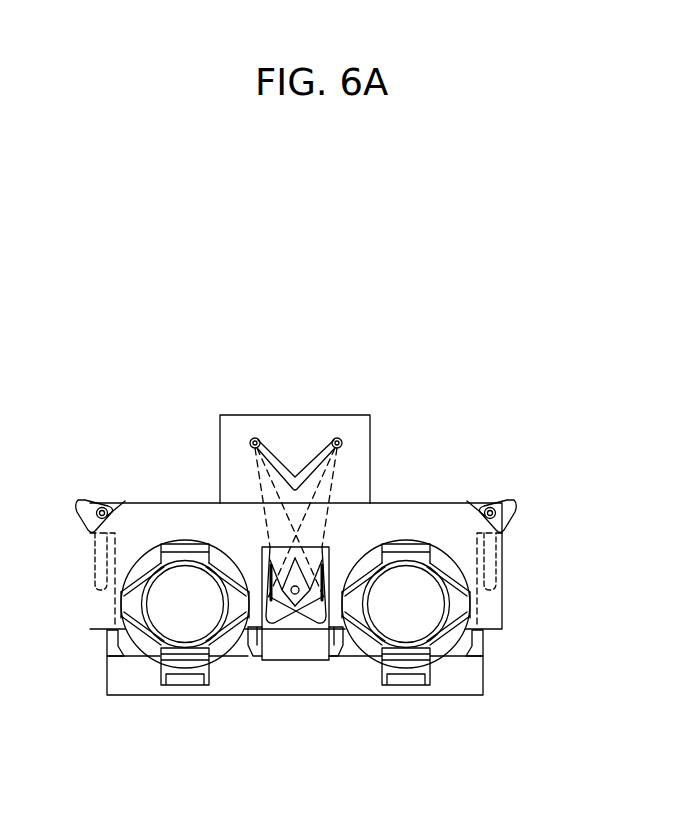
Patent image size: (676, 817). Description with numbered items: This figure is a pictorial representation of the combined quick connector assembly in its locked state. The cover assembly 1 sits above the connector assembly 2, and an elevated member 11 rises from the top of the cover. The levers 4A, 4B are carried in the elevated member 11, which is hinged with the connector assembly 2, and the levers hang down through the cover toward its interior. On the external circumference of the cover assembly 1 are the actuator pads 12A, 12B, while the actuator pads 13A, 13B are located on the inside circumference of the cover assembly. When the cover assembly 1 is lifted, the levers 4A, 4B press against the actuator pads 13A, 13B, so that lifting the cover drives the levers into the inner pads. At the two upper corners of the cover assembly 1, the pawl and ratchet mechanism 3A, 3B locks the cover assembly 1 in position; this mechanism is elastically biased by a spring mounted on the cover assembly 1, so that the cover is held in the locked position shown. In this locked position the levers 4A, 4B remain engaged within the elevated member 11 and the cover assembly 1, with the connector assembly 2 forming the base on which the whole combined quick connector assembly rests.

The cover assembly 1 is at (502, 595).
The connector assembly 2 is at (473, 680).
The pawl and ratchet mechanism 3A is at (80, 497).
The pawl and ratchet mechanism 3B is at (512, 495).
The lever 4A is at (255, 478).
The lever 4B is at (337, 473).
The elevated member 11 is at (299, 424).
The actuator pad 12A is at (108, 651).
The actuator pad 12B is at (483, 645).
The actuator pad 13A is at (257, 653).
The actuator pad 13B is at (335, 653).